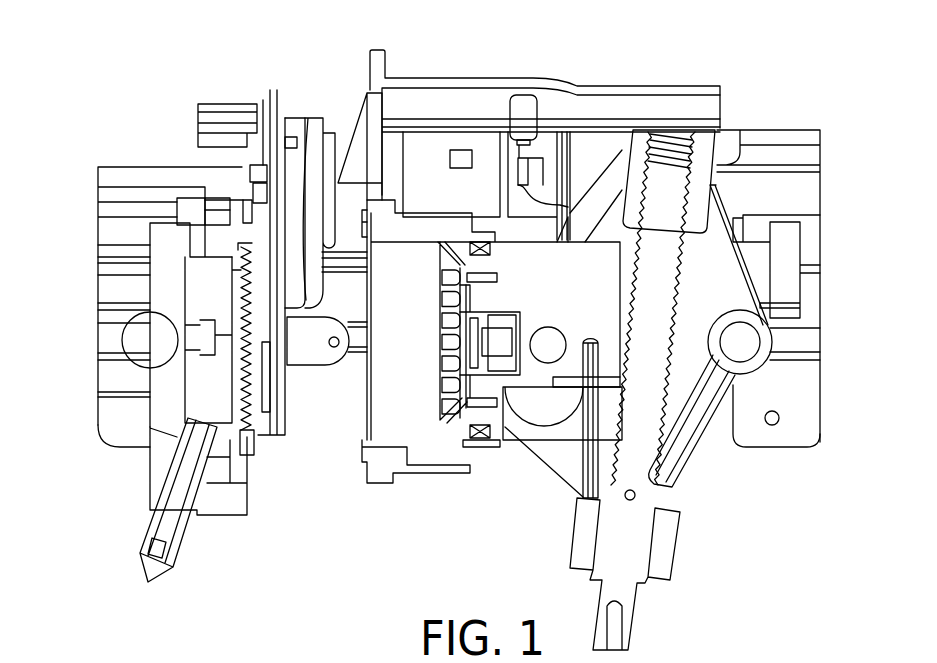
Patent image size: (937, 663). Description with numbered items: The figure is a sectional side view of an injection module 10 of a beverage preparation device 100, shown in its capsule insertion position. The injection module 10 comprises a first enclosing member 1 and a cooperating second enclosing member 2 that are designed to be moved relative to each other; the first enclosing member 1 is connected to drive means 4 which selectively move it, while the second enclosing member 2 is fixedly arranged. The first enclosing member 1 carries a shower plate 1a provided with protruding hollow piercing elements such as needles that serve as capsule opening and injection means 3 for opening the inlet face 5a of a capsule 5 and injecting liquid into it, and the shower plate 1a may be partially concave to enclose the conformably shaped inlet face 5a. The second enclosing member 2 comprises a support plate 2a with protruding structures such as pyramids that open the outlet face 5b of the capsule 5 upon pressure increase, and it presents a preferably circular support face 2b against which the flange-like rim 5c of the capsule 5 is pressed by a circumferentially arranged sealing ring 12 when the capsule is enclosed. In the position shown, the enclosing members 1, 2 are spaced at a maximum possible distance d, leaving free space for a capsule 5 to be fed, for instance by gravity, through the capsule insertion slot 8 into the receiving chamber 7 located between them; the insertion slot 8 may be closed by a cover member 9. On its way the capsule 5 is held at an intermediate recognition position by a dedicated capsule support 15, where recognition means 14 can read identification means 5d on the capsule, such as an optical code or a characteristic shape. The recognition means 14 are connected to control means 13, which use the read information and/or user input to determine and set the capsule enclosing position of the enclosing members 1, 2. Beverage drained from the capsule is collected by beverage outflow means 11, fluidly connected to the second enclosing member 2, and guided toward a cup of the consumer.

The first enclosing member 1 is at (447, 254).
The shower plate 1a is at (478, 447).
The second enclosing member 2 is at (250, 433).
The support plate 2a is at (237, 290).
The support face 2b is at (250, 452).
The capsule opening and injection means 3 is at (443, 340).
The drive means 4 is at (637, 602).
The capsule 5 is at (302, 56).
The inlet face 5a is at (320, 133).
The outlet face 5b is at (262, 165).
The flange-like rim 5c is at (271, 117).
The identification means 5d is at (296, 137).
The receiving chamber 7 is at (349, 428).
The capsule insertion slot 8 is at (362, 90).
The cover member 9 is at (430, 78).
The injection module 10 is at (163, 105).
The beverage outflow means 11 is at (128, 578).
The sealing ring 12 is at (440, 460).
The control means 13 is at (460, 152).
The recognition means 14 is at (256, 168).
The capsule support 15 is at (267, 383).
The beverage preparation device 100 is at (796, 82).
The distance d is at (260, 372).